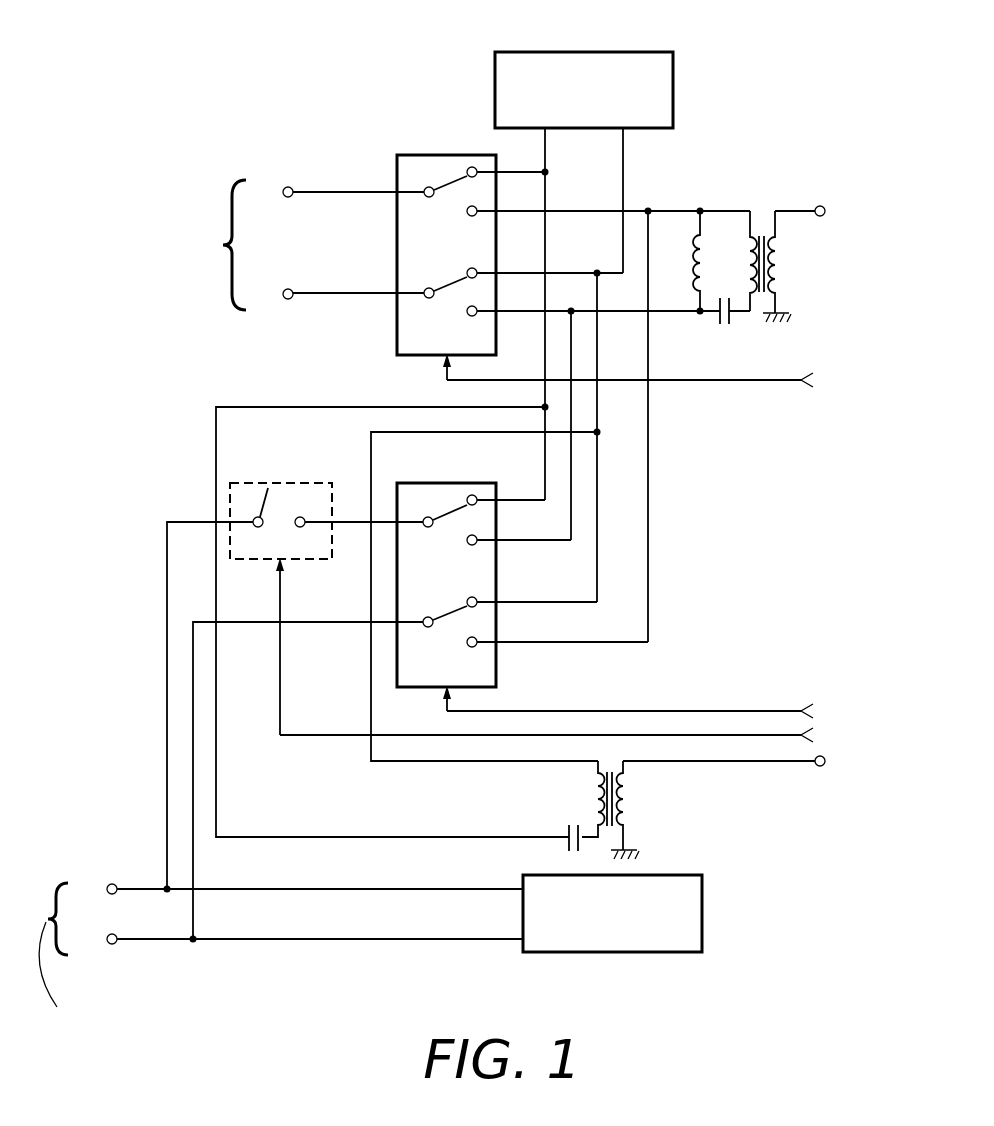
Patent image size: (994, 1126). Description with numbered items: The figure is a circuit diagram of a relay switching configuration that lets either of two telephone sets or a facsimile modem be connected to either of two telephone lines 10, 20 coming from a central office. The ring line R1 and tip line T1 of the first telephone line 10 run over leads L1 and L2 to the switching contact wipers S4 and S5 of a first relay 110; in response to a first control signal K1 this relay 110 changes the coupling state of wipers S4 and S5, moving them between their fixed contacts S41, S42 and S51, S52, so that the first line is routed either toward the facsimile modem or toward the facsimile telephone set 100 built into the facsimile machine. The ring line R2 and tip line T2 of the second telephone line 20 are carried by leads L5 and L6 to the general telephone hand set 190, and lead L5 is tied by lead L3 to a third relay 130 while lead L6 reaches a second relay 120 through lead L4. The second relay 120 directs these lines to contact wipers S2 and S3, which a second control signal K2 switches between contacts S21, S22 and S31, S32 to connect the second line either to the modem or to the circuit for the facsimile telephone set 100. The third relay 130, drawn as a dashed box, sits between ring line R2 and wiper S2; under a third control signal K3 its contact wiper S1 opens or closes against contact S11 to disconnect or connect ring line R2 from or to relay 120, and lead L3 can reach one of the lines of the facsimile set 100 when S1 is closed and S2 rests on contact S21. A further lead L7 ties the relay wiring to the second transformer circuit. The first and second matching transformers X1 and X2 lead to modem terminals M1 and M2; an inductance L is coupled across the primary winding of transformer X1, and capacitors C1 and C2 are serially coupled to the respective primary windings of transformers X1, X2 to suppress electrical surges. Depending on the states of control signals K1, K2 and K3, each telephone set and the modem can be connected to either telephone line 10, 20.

The facsimile telephone set 100 is at (584, 50).
The first relay 110 is at (447, 155).
The second relay 120 is at (447, 483).
The third relay 130 is at (280, 483).
The general telephone hand set 190 is at (705, 912).
The first telephone line 10 is at (181, 245).
The second telephone line 20 is at (89, 969).
The lead L1 is at (345, 192).
The lead L2 is at (345, 293).
The lead L3 is at (167, 740).
The lead L4 is at (193, 866).
The lead L5 is at (142, 889).
The lead L6 is at (153, 939).
The line L7 is at (344, 407).
The inductance L is at (684, 261).
The capacitor C1 is at (729, 300).
The capacitor C2 is at (568, 828).
The first matching transformer X1 is at (770, 252).
The second matching transformer X2 is at (610, 800).
The terminal M1 is at (818, 211).
The terminal M2 is at (742, 762).
The first control signal K1 is at (643, 373).
The second control signal K2 is at (643, 704).
The third control signal K3 is at (560, 652).
The ring line R1 is at (273, 193).
The tip line T1 is at (274, 295).
The ring line R2 is at (97, 890).
The tip line T2 is at (98, 940).
The contact wiper S1 is at (255, 521).
The switch contact S11 is at (297, 535).
The contact wiper S2 is at (428, 527).
The contact S21 is at (472, 505).
The switch contact S22 is at (472, 545).
The contact wiper S3 is at (428, 627).
The switch contact S31 is at (472, 607).
The switch contact S32 is at (472, 647).
The contact wiper S4 is at (429, 197).
The switch contact S41 is at (472, 177).
The switch contact S42 is at (472, 216).
The contact wiper S5 is at (429, 298).
The switch contact S51 is at (472, 278).
The switch contact S52 is at (472, 316).